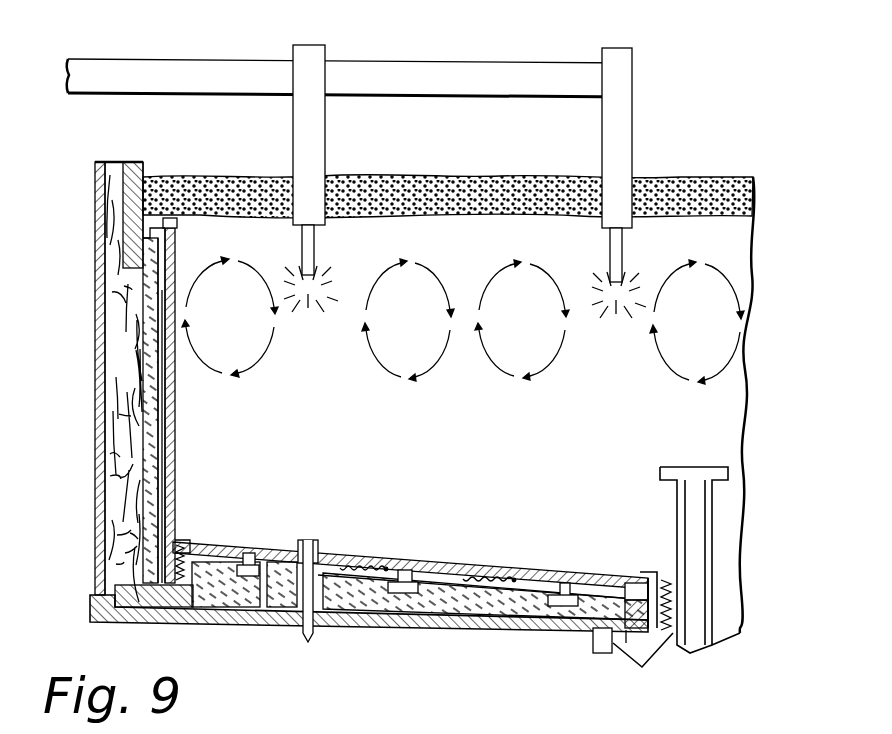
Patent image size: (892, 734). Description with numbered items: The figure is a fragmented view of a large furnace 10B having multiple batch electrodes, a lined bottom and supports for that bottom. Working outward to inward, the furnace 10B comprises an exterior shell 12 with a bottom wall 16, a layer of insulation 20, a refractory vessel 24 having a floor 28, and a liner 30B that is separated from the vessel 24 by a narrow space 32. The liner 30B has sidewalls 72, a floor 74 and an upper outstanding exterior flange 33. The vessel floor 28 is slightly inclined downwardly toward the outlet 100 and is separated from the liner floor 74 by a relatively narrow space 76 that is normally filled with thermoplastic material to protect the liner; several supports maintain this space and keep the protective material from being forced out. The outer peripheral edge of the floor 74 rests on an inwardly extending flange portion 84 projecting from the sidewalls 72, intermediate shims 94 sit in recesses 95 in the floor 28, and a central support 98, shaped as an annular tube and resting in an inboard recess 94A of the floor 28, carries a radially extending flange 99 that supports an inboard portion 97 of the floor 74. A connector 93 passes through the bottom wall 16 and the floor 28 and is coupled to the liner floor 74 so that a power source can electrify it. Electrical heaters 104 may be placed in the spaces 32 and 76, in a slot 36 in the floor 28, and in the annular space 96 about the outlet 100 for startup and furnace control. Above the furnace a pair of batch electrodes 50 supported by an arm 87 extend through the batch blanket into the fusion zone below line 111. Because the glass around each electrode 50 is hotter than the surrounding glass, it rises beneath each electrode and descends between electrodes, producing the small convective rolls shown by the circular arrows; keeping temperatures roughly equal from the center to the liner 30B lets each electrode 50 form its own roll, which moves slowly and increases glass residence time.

The furnace 10B is at (702, 156).
The exterior shell 12 is at (95, 308).
The bottom wall 16 is at (440, 632).
The layer of insulation 20 is at (113, 345).
The refractory vessel 24 is at (156, 367).
The floor 28 is at (216, 604).
The liner 30B is at (172, 422).
The narrow space 32 is at (164, 393).
The upper outstanding exterior flange 33 is at (177, 226).
The slot 36 is at (200, 608).
The batch electrodes 50 is at (325, 133).
The sidewalls 72 is at (176, 458).
The floor 74 is at (360, 552).
The narrow space 76 is at (458, 565).
The flange portion 84 is at (176, 540).
The arm 87 is at (449, 59).
The connector 93 is at (308, 642).
The shims 94 is at (250, 552).
The inboard recess 94A is at (625, 632).
The recesses 95 is at (258, 622).
The annular space 96 is at (672, 566).
The inboard portion 97 is at (640, 572).
The central support 98 is at (589, 630).
The radially extending flange 99 is at (626, 580).
The outlet 100 is at (464, 207).
The electrical heaters 104 is at (164, 482).
The line 111 is at (382, 222).